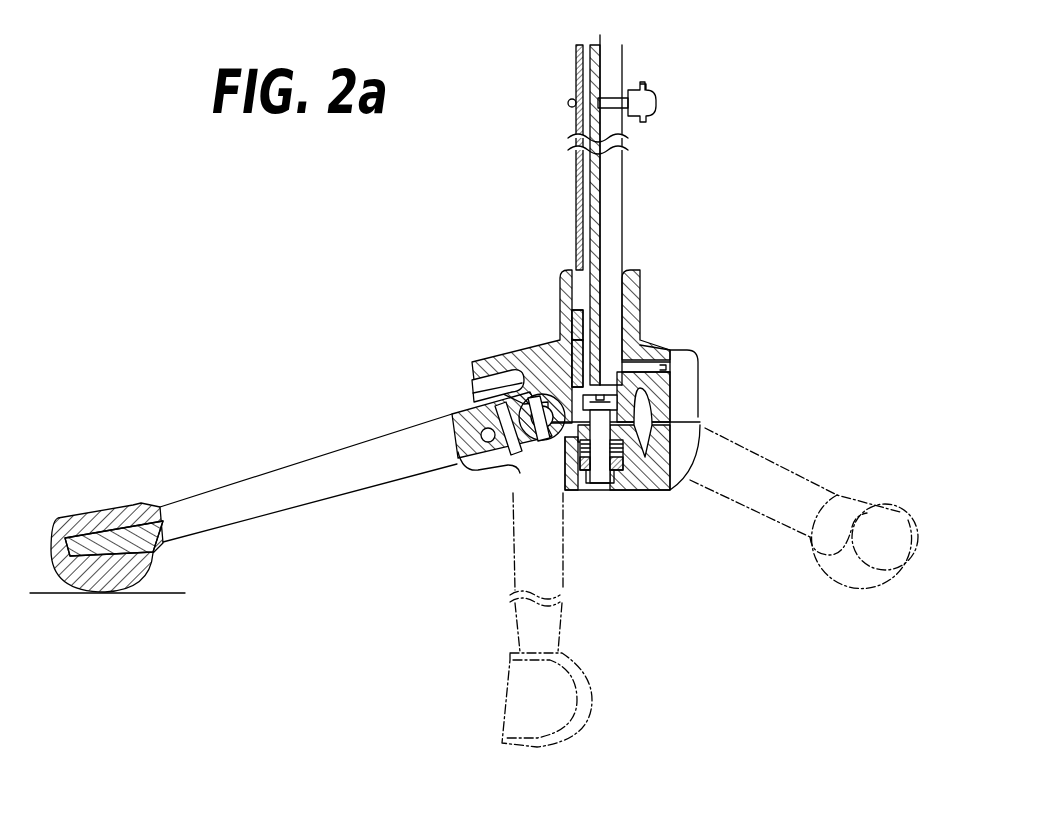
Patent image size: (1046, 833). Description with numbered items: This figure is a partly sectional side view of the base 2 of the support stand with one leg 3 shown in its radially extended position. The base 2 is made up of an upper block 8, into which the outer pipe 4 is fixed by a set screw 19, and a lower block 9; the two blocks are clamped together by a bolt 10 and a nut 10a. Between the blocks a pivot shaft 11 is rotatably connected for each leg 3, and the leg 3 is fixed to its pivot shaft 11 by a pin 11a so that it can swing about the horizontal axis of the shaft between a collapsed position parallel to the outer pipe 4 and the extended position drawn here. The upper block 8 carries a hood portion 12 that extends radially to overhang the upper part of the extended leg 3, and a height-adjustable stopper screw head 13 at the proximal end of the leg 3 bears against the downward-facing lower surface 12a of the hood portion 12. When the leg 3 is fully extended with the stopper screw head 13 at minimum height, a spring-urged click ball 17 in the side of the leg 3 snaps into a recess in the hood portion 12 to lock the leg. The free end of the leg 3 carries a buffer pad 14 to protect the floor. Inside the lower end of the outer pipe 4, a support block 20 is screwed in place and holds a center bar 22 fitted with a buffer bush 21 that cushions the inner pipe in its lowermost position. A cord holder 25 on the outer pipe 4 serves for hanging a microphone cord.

The base 2 is at (729, 387).
The leg 3 is at (247, 490).
The outer pipe 4 is at (615, 182).
The upper block 8 is at (642, 342).
The lower block 9 is at (652, 477).
The bolt 10 is at (595, 483).
The nut 10a is at (615, 472).
The pivot shaft 11 is at (463, 455).
The pin 11a is at (522, 480).
The hood portion 12 is at (477, 360).
The lower surface 12a is at (513, 347).
The stopper screw head 13 is at (475, 406).
The buffer pad 14 is at (80, 516).
The click ball 17 is at (480, 435).
The set screw 19 is at (647, 368).
The support block 20 is at (560, 340).
The buffer bush 21 is at (560, 315).
The center bar 22 is at (600, 222).
The cord holder 25 is at (650, 90).